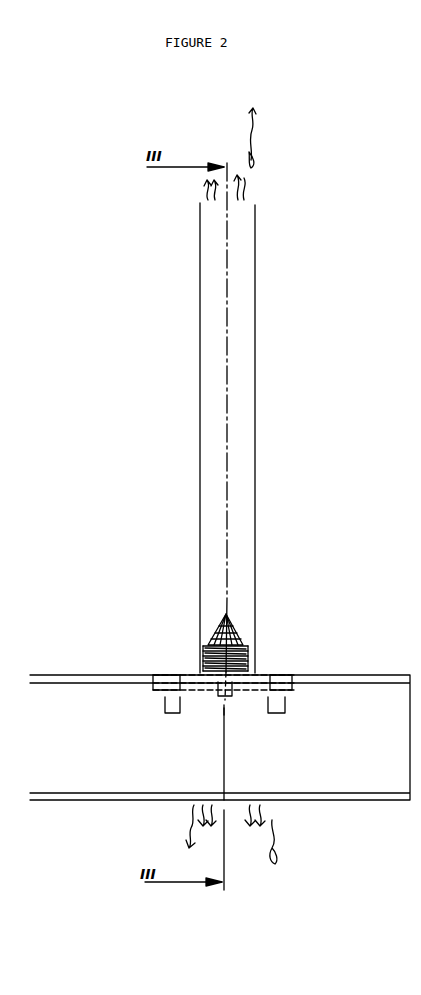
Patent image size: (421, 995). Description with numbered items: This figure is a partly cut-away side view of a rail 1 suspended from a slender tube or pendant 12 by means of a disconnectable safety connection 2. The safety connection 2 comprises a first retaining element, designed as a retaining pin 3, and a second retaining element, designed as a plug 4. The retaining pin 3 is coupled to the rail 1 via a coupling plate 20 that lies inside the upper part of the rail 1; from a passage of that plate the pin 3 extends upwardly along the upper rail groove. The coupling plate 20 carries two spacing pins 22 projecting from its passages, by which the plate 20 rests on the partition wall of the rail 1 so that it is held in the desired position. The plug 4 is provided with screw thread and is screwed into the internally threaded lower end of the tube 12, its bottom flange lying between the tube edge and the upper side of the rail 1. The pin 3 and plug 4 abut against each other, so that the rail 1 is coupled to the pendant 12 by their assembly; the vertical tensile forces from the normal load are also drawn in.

The rail 1 is at (85, 705).
The disconnectable safety connection 2 is at (196, 648).
The retaining pin 3 is at (237, 635).
The plug 4 is at (250, 648).
The tube 12 is at (243, 488).
The coupling plate 20 is at (298, 681).
The spacing pins 22 is at (285, 703).